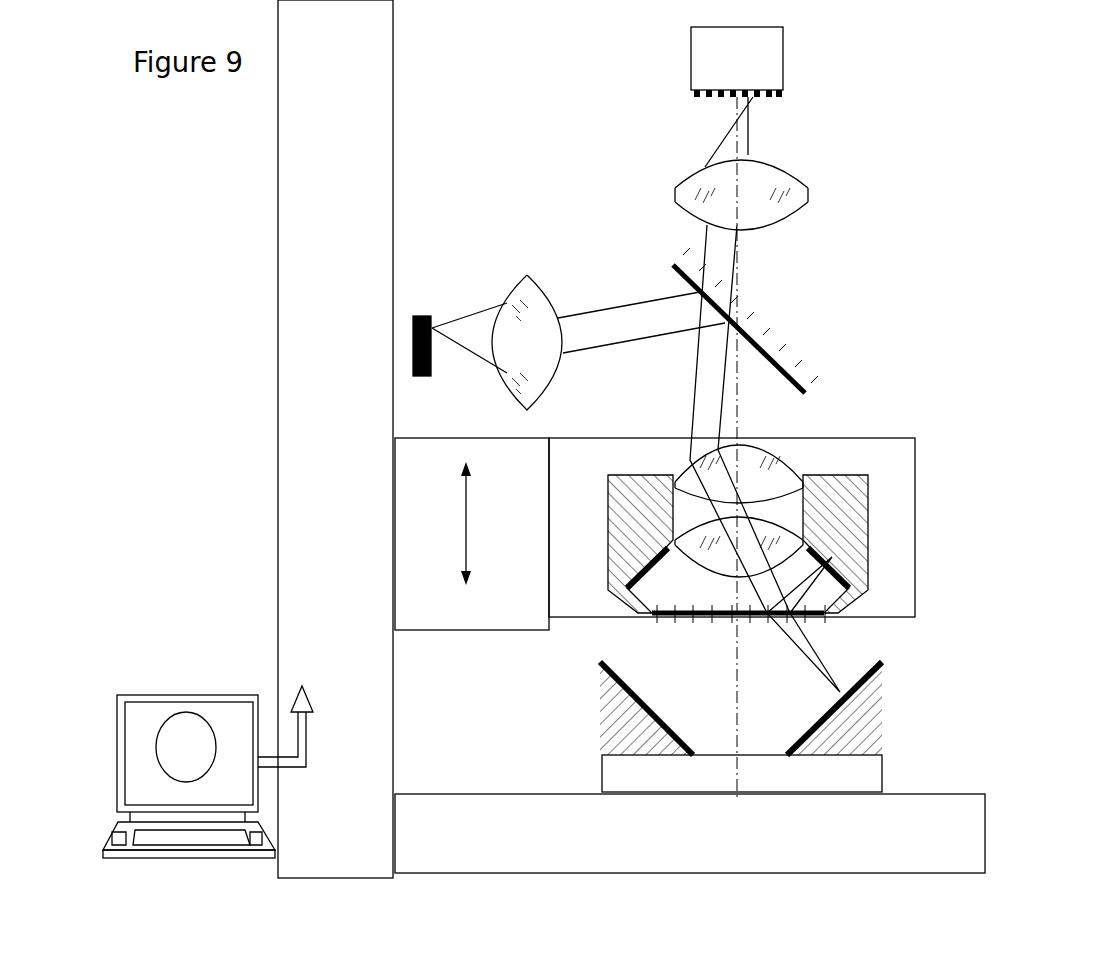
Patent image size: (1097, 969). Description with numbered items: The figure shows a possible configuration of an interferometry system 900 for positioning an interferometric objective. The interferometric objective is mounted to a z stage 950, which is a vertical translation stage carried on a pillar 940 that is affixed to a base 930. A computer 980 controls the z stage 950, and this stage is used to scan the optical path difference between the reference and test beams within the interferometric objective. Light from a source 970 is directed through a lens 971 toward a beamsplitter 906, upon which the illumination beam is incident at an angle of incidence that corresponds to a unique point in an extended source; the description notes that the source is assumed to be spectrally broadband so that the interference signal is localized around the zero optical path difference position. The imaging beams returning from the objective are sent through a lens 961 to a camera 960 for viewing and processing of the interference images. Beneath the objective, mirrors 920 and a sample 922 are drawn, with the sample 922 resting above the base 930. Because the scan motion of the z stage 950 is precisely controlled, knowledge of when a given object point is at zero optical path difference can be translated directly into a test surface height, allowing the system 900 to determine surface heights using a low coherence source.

The interferometry system 900 is at (1010, 258).
The beamsplitter 906 is at (783, 347).
The illumination mirrors 920 is at (800, 720).
The sample 922 is at (847, 778).
The base 930 is at (690, 833).
The pillar 940 is at (335, 439).
The z stage 950 is at (472, 534).
The camera 960 is at (737, 62).
The imaging lens 961 is at (810, 182).
The light source 970 is at (428, 313).
The collimating lens 971 is at (523, 290).
The computer 980 is at (150, 700).